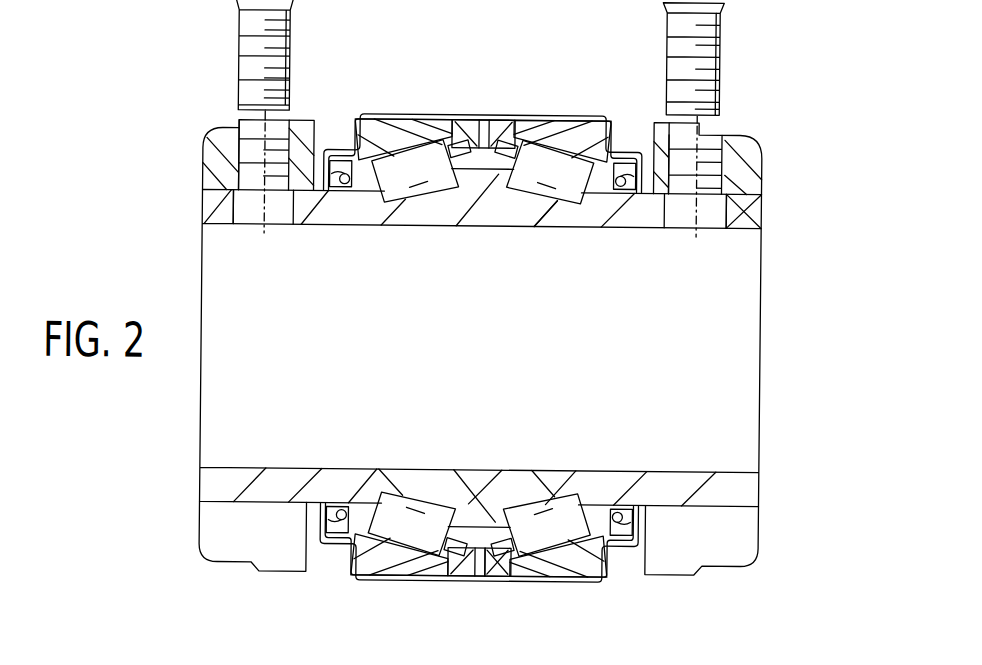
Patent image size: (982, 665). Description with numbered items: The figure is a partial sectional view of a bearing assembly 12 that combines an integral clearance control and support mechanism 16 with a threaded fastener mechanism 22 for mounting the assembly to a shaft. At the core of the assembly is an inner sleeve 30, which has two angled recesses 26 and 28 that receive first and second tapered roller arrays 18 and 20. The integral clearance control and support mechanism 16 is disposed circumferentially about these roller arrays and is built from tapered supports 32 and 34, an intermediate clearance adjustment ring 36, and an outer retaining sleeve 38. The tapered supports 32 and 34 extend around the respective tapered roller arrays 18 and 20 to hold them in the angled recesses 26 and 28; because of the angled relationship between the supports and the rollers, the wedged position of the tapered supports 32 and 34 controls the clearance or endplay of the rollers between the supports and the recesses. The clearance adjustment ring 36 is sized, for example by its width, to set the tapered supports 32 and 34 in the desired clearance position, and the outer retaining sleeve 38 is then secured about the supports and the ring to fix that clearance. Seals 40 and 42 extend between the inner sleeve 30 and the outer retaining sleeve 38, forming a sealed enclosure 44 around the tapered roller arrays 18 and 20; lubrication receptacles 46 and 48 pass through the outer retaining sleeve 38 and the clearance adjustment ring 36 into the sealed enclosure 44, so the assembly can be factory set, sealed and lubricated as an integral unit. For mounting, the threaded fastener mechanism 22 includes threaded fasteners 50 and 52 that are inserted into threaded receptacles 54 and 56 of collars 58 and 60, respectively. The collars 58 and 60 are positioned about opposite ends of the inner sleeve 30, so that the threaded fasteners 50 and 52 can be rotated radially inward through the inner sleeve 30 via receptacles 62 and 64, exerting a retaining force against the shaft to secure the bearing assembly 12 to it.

The bearing assembly 12 is at (815, 333).
The integral clearance control and support mechanism 16 is at (494, 77).
The tapered roller array 18 is at (378, 192).
The tapered roller array 20 is at (583, 193).
The threaded fastener mechanism 22 is at (765, 101).
The angled recess 26 is at (397, 200).
The angled recess 28 is at (550, 195).
The inner sleeve 30 is at (763, 215).
The tapered support 32 is at (400, 128).
The tapered support 34 is at (560, 133).
The intermediate clearance adjustment ring 36 is at (498, 125).
The outer retaining sleeve 38 is at (370, 112).
The seal 40 is at (345, 148).
The seal 42 is at (620, 140).
The sealed enclosure 44 is at (355, 503).
The lubrication receptacle 46 is at (476, 582).
The lubrication receptacle 48 is at (497, 583).
The threaded fastener 50 is at (237, 83).
The threaded fastener 52 is at (722, 70).
The threaded receptacle 54 is at (245, 172).
The threaded receptacle 56 is at (713, 170).
The collar 58 is at (212, 135).
The collar 60 is at (757, 137).
The receptacle 62 is at (215, 210).
The receptacle 64 is at (745, 212).